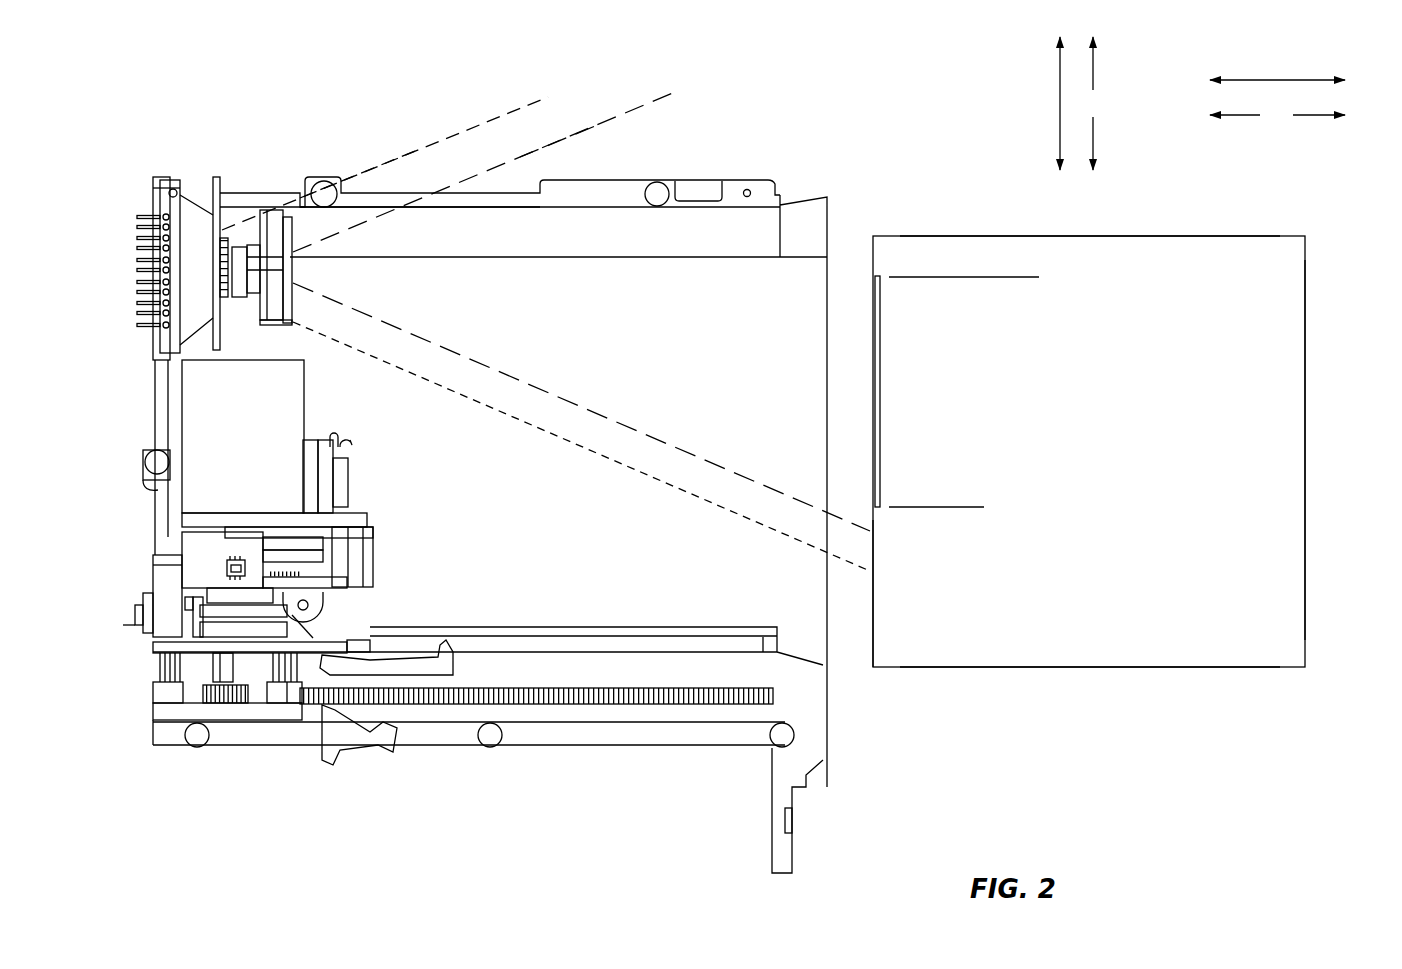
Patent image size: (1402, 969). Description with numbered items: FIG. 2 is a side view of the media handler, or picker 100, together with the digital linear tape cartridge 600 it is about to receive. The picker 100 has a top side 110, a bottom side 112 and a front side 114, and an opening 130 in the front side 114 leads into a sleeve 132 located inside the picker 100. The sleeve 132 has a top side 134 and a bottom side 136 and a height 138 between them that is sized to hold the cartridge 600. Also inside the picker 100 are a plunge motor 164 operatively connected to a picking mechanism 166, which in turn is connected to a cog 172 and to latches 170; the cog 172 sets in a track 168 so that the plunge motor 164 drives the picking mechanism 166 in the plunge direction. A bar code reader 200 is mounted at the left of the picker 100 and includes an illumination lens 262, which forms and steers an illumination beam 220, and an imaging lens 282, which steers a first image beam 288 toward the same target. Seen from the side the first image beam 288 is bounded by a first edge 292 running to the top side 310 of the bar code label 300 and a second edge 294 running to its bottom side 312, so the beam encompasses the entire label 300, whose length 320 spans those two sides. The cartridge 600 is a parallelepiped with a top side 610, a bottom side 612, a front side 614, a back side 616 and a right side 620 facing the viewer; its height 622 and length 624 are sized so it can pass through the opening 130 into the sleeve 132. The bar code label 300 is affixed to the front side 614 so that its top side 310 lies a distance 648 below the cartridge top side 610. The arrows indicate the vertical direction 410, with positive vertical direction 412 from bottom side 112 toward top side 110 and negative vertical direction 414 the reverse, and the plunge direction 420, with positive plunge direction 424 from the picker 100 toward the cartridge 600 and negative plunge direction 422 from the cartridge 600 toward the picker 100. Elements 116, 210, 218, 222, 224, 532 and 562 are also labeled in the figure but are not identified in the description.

The picker 100 is at (792, 132).
The top side 110 is at (750, 178).
The bottom side 112 is at (537, 745).
The front side 114 is at (825, 730).
The side frame 116 is at (153, 415).
The opening 130 is at (833, 260).
The sleeve 132 is at (378, 204).
The sleeve top side 134 is at (545, 210).
The sleeve bottom side 136 is at (615, 652).
The sleeve height 138 is at (735, 208).
The plunge motor 164 is at (308, 400).
The picking mechanism 166 is at (385, 592).
The track 168 is at (656, 707).
The latches 170 is at (428, 752).
The cog 172 is at (263, 668).
The bar code reader 200 is at (131, 280).
The mounting plate 210 is at (217, 177).
The housing length 218 is at (875, 223).
The illumination beam 220 is at (480, 120).
The upper beam edge 222 is at (407, 155).
The lower beam edge 224 is at (632, 478).
The illumination lens 262 is at (294, 306).
The imaging lens 282 is at (300, 263).
The first image beam 288 is at (624, 120).
The first edge 292 is at (562, 157).
The second edge 294 is at (538, 390).
The bar code label 300 is at (886, 415).
The label top side 310 is at (878, 277).
The label bottom side 312 is at (878, 510).
The label length 320 is at (973, 277).
The vertical direction 410 is at (1058, 105).
The positive vertical direction 412 is at (1093, 78).
The negative vertical direction 414 is at (1093, 128).
The plunge direction 420 is at (1280, 78).
The negative plunge direction 422 is at (1255, 118).
The positive plunge direction 424 is at (1300, 118).
The offset distance 532 is at (307, 95).
The lens assembly 562 is at (237, 305).
The digital linear tape cartridge 600 is at (1271, 204).
The cartridge top side 610 is at (1200, 233).
The cartridge bottom side 612 is at (1055, 667).
The cartridge front side 614 is at (873, 632).
The cartridge back side 616 is at (1306, 377).
The cartridge right side 620 is at (1127, 451).
The cartridge height 622 is at (1318, 236).
The cartridge length 624 is at (1305, 725).
The distance 648 is at (1023, 192).